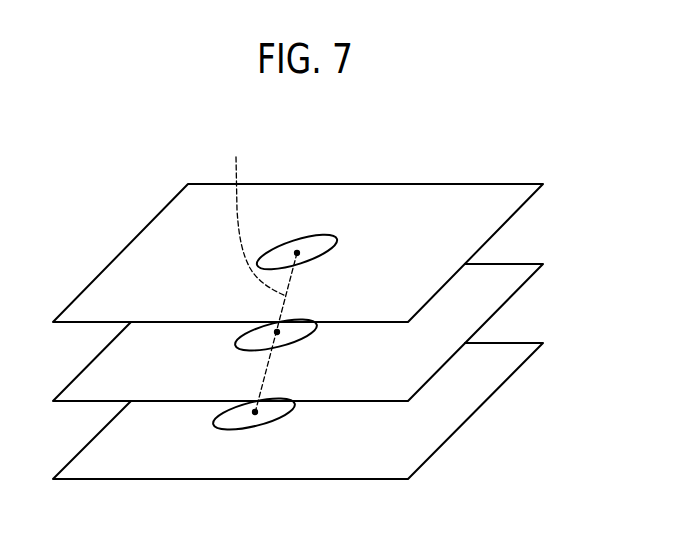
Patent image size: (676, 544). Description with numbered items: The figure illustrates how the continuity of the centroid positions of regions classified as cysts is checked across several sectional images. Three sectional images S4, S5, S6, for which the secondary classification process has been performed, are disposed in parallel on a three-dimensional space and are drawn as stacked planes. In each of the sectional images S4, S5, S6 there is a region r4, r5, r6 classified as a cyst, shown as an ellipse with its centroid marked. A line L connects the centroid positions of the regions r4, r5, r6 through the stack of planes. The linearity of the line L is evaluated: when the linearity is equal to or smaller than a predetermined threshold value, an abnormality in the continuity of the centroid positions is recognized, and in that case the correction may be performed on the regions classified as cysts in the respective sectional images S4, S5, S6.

The line connecting the centroid positions L is at (262, 269).
The region classified as a cyst r4 is at (325, 235).
The region classified as a cyst r5 is at (312, 334).
The region classified as a cyst r6 is at (293, 413).
The sectional image S4 is at (503, 183).
The sectional image S5 is at (503, 264).
The sectional image S6 is at (503, 343).